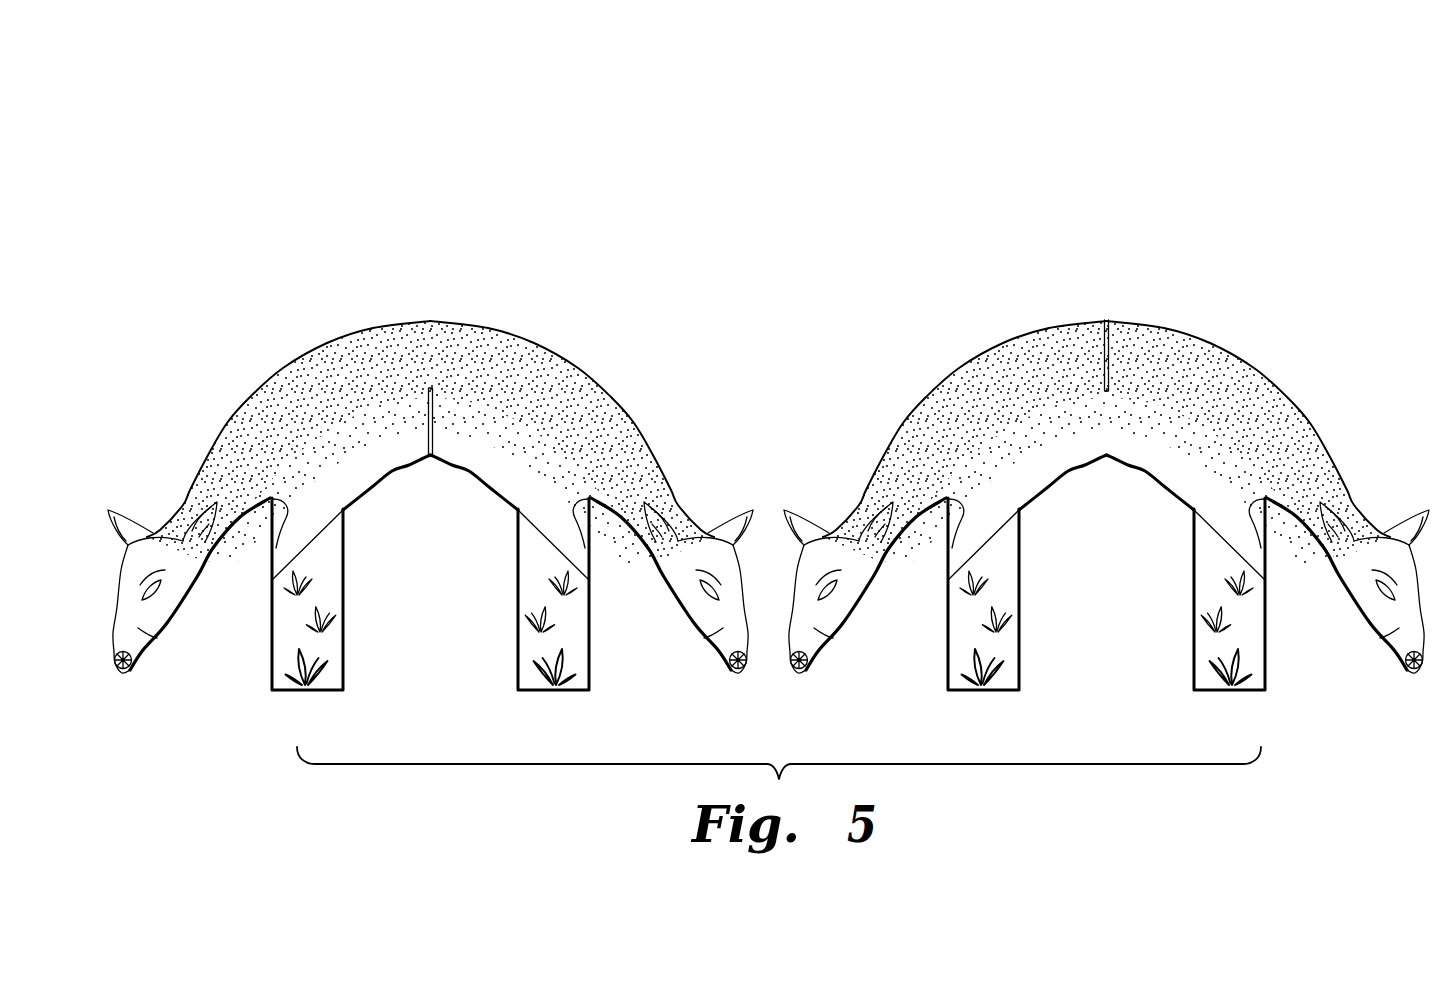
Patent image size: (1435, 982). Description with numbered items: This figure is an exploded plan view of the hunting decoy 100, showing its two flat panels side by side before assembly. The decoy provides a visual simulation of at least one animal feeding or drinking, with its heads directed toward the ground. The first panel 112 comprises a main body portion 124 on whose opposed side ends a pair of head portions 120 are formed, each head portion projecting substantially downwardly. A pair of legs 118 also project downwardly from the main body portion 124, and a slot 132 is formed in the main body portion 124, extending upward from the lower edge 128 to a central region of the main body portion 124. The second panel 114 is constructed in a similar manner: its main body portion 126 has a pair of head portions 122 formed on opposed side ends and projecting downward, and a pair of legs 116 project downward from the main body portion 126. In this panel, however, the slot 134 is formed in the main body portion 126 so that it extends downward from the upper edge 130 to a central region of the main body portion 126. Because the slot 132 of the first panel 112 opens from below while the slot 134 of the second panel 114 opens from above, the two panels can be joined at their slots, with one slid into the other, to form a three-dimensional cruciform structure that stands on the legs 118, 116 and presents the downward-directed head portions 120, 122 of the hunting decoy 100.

The hunting decoy 100 is at (265, 137).
The first panel 112 is at (241, 343).
The second panel 114 is at (1105, 472).
The legs 116 is at (1106, 594).
The legs 118 is at (518, 654).
The head portions 120 is at (160, 640).
The head portions 122 is at (1105, 557).
The main body portion 124 is at (577, 402).
The main body portion 126 is at (1106, 443).
The lower edge 128 is at (450, 467).
The upper edge 130 is at (1106, 402).
The slot 132 is at (431, 388).
The slot 134 is at (1073, 322).